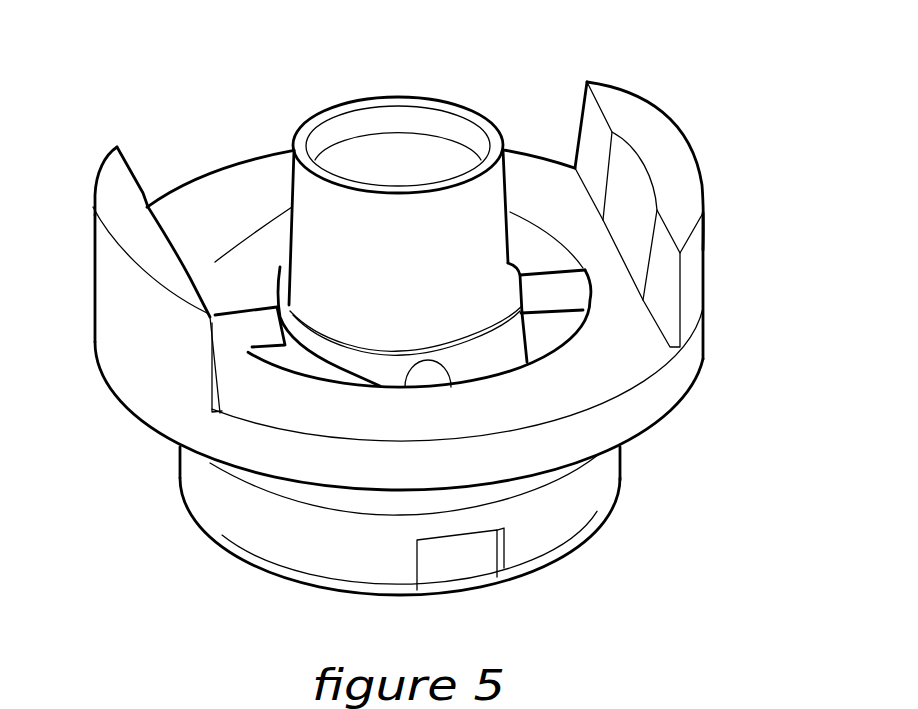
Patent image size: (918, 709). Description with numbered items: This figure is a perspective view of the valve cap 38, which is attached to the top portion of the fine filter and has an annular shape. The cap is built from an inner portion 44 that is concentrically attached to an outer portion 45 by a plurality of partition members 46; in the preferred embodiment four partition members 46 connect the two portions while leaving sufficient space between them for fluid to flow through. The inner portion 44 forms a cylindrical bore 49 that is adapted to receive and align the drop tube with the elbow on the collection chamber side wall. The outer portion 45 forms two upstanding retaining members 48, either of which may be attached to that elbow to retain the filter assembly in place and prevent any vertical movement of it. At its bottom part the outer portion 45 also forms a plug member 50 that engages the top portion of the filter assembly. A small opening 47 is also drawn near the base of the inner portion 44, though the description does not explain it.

The valve cap 38 is at (685, 131).
The inner portion 44 is at (280, 273).
The outer portion 45 is at (545, 197).
The partition members 46 is at (248, 330).
The hole 47 is at (478, 397).
The retaining members 48 is at (100, 165).
The cylindrical bore 49 is at (295, 208).
The plug member 50 is at (278, 568).